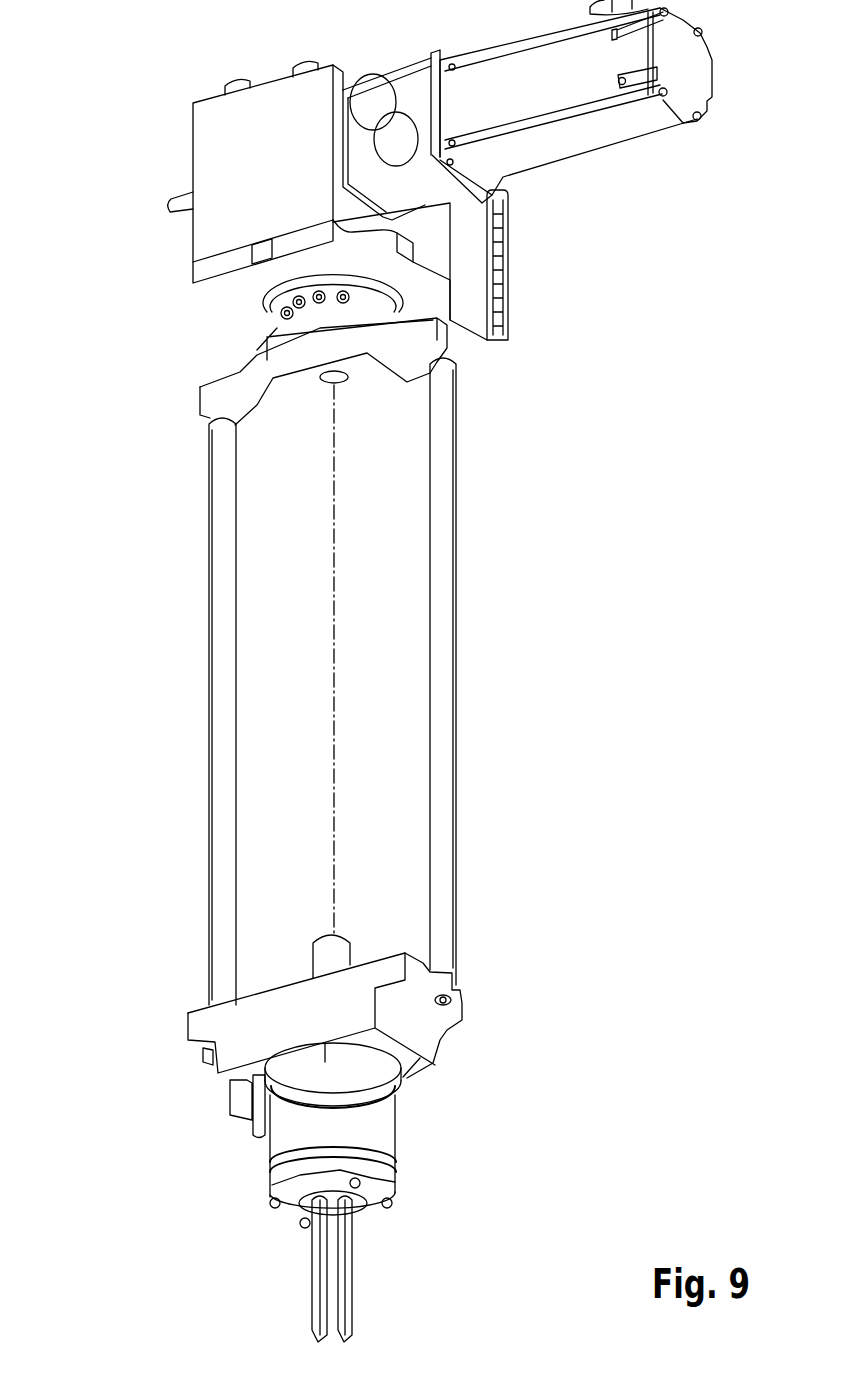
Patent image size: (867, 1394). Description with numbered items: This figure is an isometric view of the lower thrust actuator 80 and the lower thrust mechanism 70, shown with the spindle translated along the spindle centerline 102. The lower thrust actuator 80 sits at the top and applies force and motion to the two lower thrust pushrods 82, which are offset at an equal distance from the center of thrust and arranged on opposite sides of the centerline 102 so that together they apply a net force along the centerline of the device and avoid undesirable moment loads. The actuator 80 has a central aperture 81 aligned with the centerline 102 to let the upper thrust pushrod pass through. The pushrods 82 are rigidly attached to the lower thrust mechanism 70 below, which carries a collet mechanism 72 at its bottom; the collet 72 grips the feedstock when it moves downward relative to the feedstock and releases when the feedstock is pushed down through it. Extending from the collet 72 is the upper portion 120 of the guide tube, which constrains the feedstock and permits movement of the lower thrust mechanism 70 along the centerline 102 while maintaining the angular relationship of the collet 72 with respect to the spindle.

The lower thrust actuator 80 is at (153, 147).
The central aperture 81 is at (328, 386).
The lower thrust pushrods 82 is at (220, 656).
The spindle centerline 102 is at (333, 598).
The lower thrust mechanism 70 is at (423, 1032).
The collet mechanism 72 is at (410, 1156).
The upper portion of guide tube 120 is at (313, 1290).